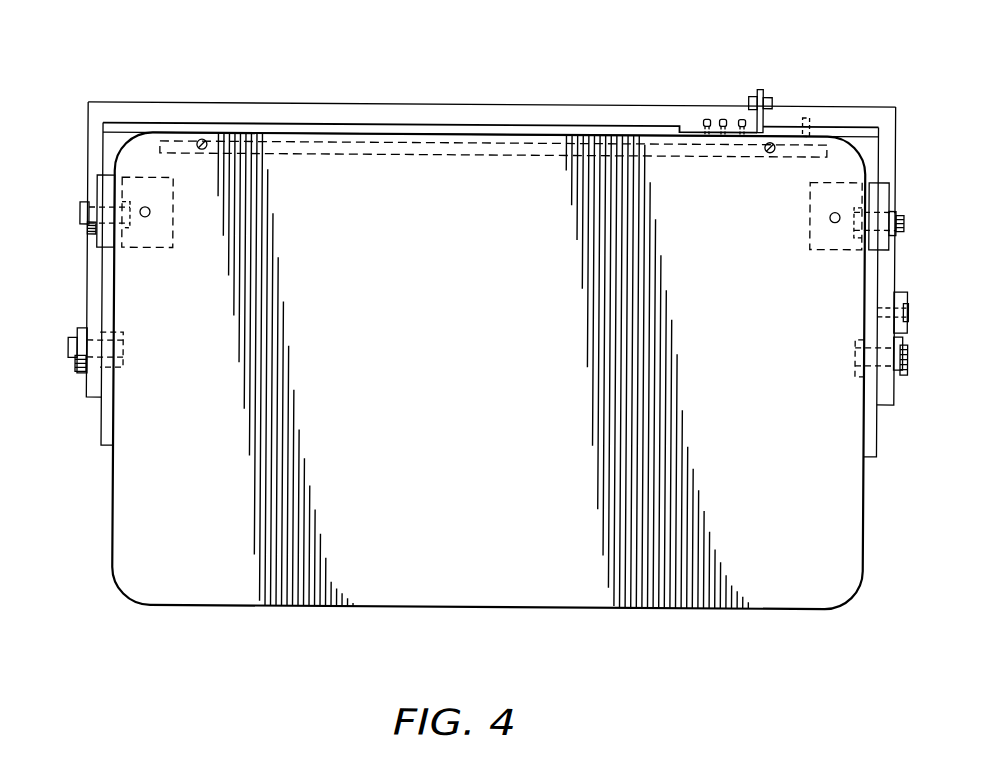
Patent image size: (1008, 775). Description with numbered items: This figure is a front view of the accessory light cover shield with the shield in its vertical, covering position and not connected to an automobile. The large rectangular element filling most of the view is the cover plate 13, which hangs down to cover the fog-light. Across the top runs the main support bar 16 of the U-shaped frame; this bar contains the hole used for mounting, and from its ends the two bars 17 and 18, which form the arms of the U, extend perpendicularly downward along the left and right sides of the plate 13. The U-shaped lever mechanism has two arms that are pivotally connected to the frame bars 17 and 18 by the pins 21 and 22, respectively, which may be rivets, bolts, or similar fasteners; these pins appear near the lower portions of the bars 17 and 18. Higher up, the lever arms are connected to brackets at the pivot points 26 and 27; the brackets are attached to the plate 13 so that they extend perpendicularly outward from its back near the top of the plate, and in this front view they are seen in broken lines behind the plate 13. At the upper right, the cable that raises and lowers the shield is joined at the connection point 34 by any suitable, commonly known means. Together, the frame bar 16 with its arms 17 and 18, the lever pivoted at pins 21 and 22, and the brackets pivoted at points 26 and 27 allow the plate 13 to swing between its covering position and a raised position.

The cover plate 13 is at (474, 546).
The main support bar 16 is at (437, 115).
The bar 17 is at (86, 286).
The bar 18 is at (896, 272).
The pin 21 is at (77, 349).
The pin 22 is at (907, 357).
The pivot point 26 is at (80, 214).
The pivot point 27 is at (903, 222).
The connection point 34 is at (757, 90).